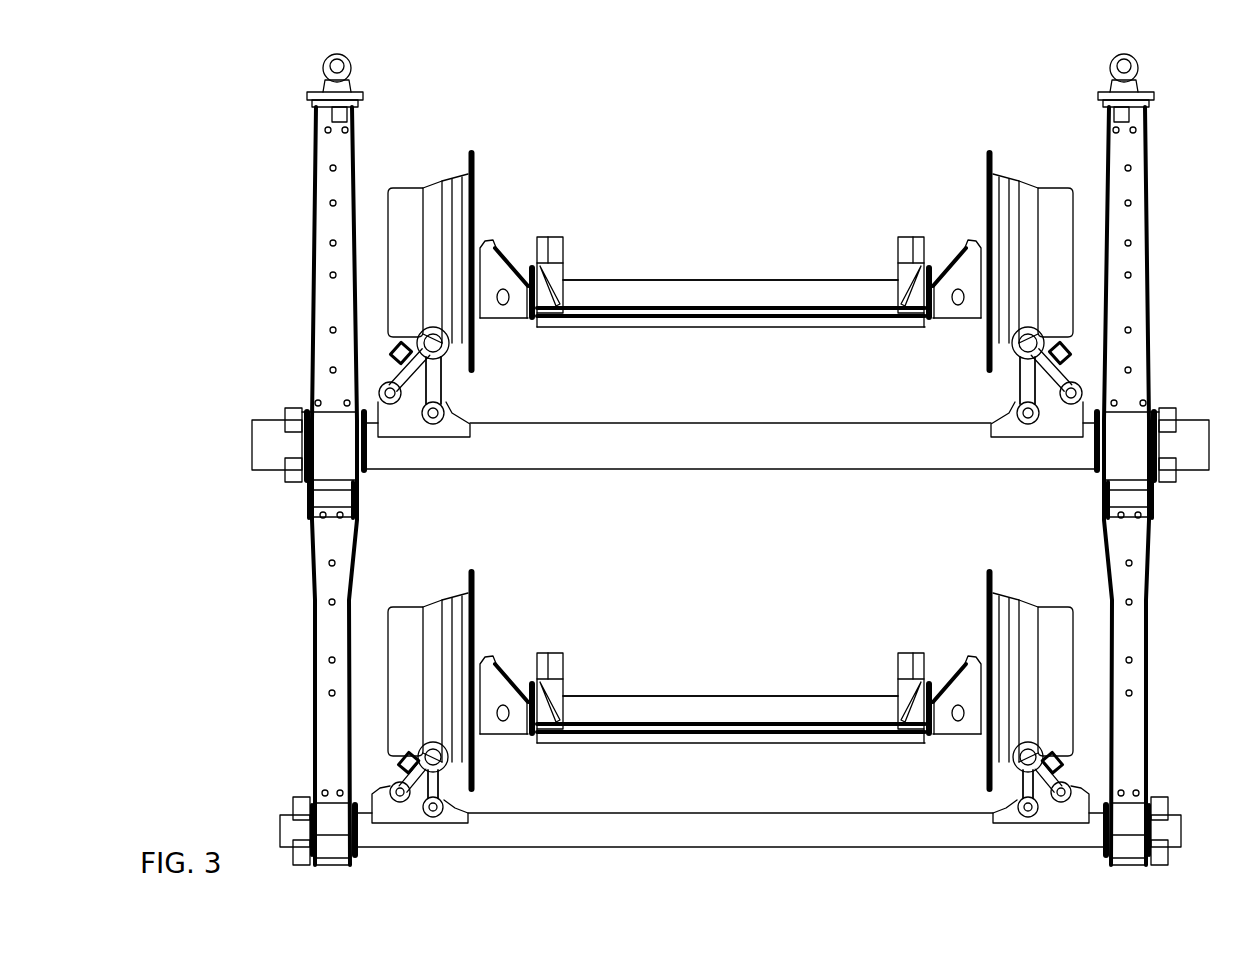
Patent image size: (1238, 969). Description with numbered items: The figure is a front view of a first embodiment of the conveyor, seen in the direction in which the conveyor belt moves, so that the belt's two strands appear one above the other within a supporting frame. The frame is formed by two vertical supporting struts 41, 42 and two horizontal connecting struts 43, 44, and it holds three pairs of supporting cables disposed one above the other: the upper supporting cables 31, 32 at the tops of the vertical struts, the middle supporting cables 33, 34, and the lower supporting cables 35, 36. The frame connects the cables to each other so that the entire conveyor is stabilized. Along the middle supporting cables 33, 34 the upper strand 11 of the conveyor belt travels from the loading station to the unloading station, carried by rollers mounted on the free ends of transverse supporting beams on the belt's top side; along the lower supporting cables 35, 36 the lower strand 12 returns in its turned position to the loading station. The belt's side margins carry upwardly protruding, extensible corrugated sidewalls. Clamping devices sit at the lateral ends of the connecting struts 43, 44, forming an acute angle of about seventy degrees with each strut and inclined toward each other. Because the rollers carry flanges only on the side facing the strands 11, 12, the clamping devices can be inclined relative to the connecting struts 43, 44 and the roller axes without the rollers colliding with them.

The upper strand 11 is at (757, 322).
The lower strand 12 is at (762, 740).
The upper supporting cable 31 is at (322, 68).
The upper supporting cable 32 is at (1147, 64).
The middle supporting cable 33 is at (418, 342).
The middle supporting cable 34 is at (1046, 341).
The lower supporting cable 35 is at (420, 753).
The lower supporting cable 36 is at (1048, 756).
The vertical supporting strut 41 is at (331, 295).
The vertical supporting strut 42 is at (1130, 294).
The horizontal connecting strut 43 is at (762, 455).
The horizontal connecting strut 44 is at (762, 835).